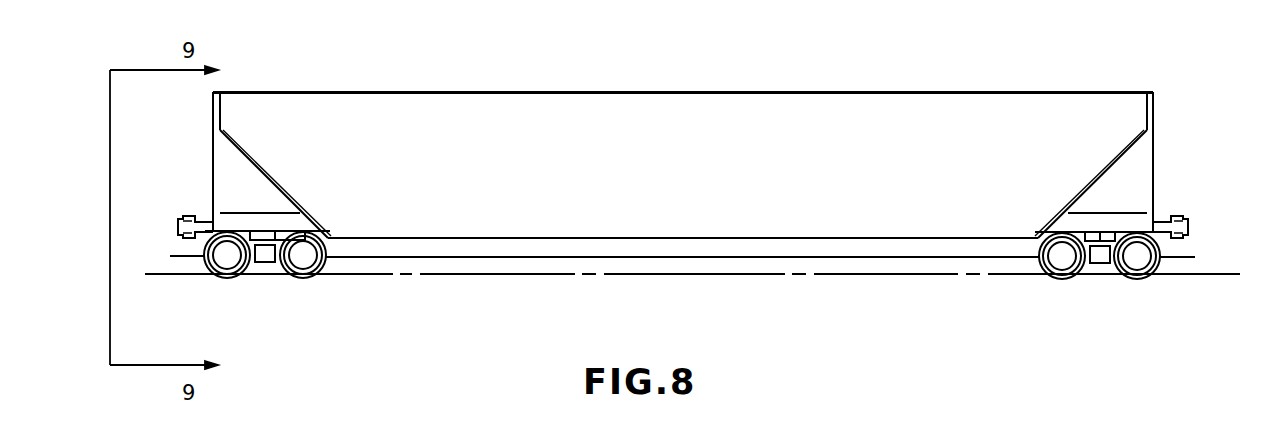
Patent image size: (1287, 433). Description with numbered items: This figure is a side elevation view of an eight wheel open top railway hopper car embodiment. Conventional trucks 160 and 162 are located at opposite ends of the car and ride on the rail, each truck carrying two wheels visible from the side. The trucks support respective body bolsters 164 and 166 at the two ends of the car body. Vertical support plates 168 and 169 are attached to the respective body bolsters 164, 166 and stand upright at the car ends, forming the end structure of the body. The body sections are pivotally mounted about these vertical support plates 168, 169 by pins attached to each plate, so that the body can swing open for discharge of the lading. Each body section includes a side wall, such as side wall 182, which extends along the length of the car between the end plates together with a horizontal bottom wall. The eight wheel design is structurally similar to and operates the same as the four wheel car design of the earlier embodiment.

The truck 160 is at (268, 292).
The truck 162 is at (1107, 292).
The body bolster 164 is at (232, 222).
The body bolster 166 is at (1130, 222).
The vertical support plate 168 is at (213, 162).
The vertical support plate 169 is at (1153, 170).
The side wall 182 is at (638, 206).